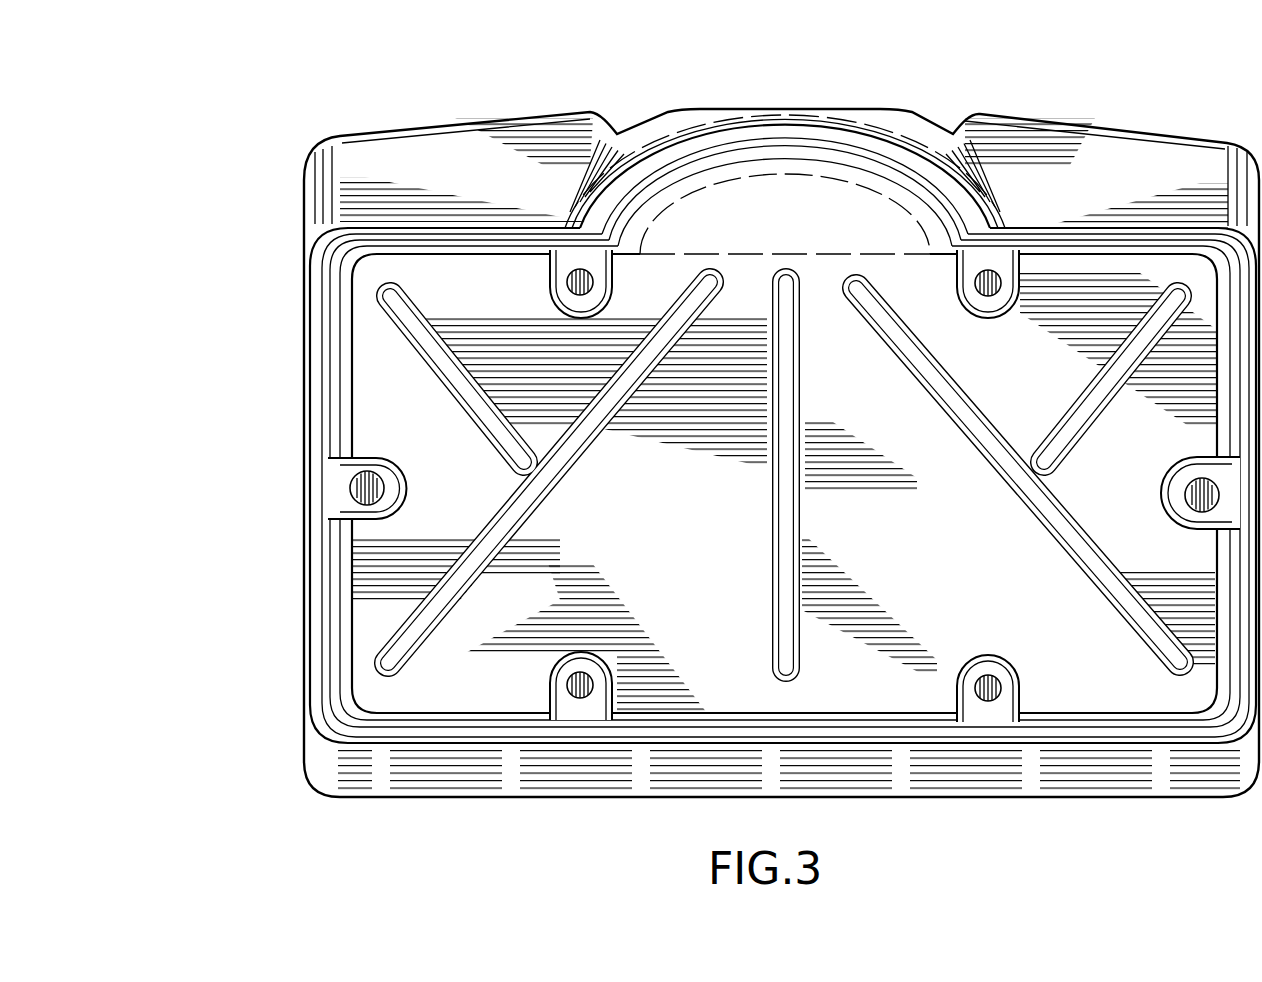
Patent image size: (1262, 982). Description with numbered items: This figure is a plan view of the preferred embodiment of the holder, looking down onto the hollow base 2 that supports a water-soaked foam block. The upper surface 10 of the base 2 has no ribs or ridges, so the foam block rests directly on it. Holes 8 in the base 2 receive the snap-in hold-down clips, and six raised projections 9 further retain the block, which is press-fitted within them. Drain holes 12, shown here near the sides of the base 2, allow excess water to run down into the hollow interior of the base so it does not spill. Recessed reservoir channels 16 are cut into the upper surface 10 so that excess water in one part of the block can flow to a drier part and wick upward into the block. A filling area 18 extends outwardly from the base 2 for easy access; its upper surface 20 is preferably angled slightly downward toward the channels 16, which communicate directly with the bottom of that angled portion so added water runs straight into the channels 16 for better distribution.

The hollow base 2 is at (302, 219).
The holes 8 is at (580, 686).
The raised projections 9 is at (557, 633).
The upper surface 10 is at (674, 486).
The drain holes 12 is at (367, 488).
The recessed reservoir channels 16 is at (940, 385).
The filling area 18 is at (715, 173).
The upper surface 20 is at (808, 178).